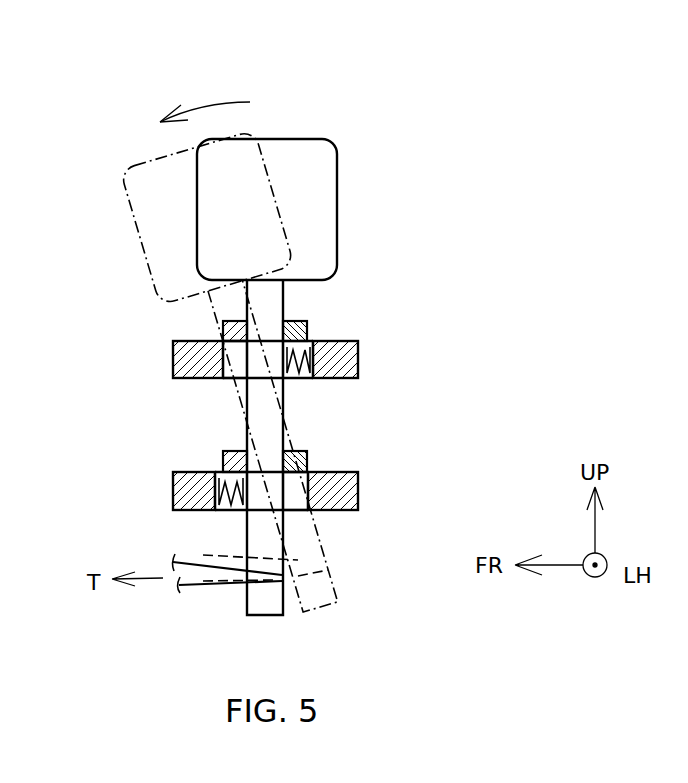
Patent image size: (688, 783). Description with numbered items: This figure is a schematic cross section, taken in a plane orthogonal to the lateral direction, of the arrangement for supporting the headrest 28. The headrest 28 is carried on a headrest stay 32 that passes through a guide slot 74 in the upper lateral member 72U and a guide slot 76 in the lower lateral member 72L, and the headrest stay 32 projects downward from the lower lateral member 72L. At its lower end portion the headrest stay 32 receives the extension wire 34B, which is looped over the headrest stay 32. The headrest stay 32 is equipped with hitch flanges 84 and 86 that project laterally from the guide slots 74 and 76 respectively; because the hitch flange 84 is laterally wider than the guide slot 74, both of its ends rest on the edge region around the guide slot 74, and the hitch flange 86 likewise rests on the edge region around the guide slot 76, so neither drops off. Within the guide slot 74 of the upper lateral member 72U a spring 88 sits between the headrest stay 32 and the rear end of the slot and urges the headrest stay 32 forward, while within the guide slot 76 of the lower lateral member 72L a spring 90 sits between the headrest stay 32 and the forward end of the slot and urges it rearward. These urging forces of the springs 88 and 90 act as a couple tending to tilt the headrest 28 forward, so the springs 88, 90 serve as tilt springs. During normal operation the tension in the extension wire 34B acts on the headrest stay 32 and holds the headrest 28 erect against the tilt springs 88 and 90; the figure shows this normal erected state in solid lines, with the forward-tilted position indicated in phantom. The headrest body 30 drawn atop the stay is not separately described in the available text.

The headrest 28 is at (312, 125).
The headrest body 30 is at (317, 192).
The headrest stay 32 is at (276, 300).
The upper lateral member 72U is at (173, 352).
The lower lateral member 72L is at (173, 490).
The guide slot 74 is at (232, 378).
The guide slot 76 is at (296, 510).
The hitch flange 84 is at (307, 328).
The hitch flange 86 is at (223, 460).
The tilt spring 88 is at (298, 378).
The tilt spring 90 is at (232, 510).
The extension wire 34B is at (217, 587).